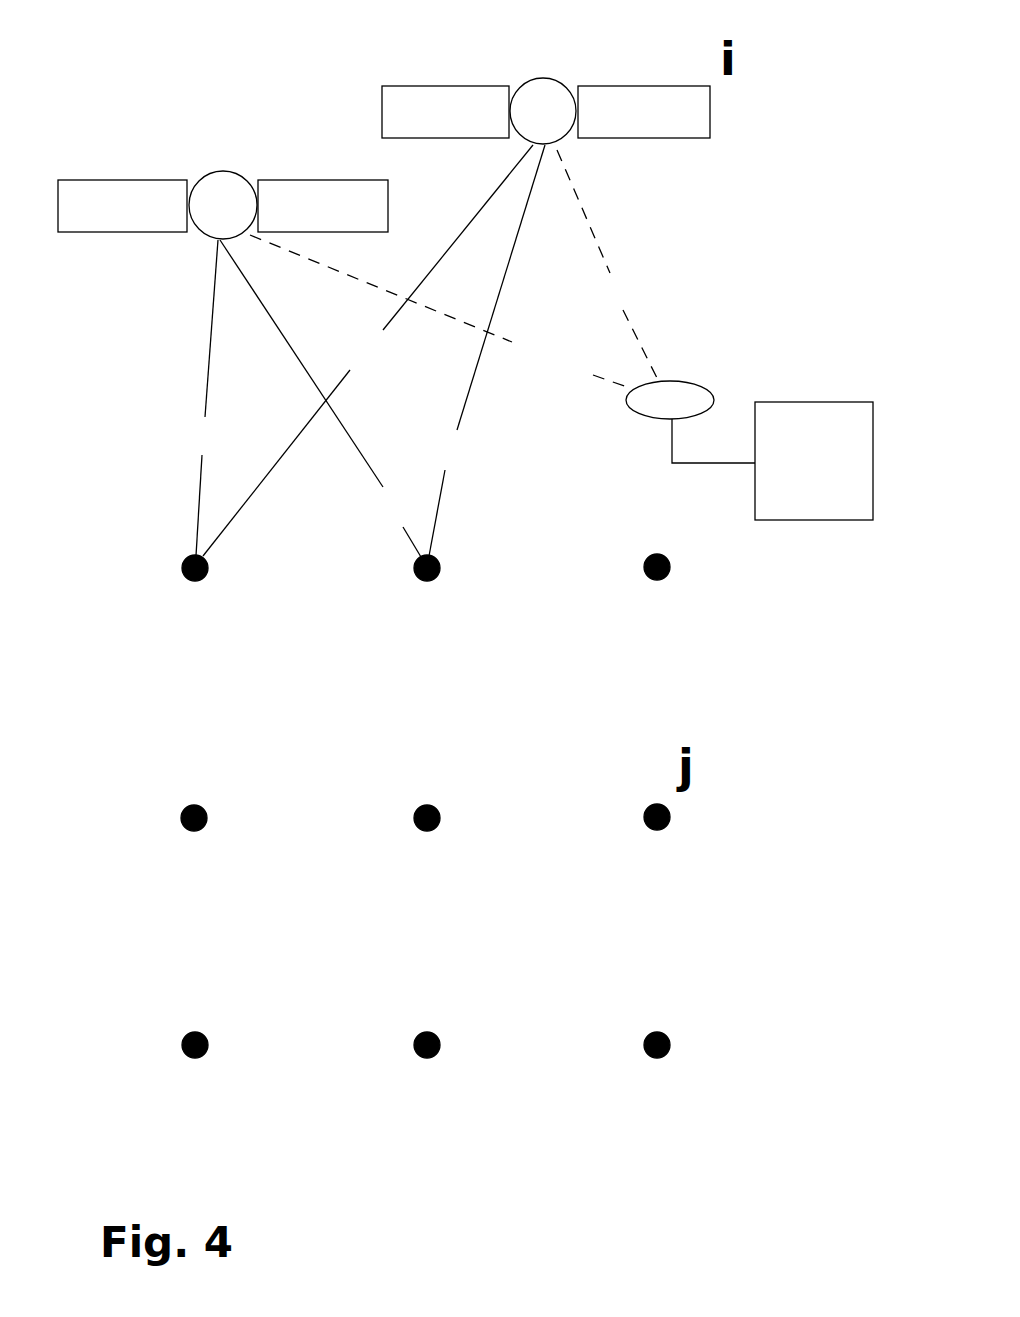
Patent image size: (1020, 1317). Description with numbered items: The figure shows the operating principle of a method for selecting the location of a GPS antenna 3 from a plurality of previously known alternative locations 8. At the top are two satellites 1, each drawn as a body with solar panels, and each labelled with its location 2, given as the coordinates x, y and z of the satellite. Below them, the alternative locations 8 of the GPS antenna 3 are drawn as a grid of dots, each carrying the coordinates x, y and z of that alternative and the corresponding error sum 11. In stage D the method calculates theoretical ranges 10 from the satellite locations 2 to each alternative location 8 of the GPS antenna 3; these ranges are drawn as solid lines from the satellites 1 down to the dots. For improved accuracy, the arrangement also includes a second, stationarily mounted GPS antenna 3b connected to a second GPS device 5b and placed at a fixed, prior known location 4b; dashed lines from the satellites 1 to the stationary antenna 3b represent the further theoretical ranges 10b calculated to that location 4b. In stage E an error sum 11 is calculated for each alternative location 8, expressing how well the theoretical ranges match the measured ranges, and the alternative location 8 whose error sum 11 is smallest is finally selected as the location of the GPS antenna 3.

The satellite 1 is at (384, 158).
The satellite location 2 is at (382, 75).
The GPS antenna 3 is at (443, 813).
The second GPS antenna 3b is at (690, 422).
The location of stationary GPS antenna 4b is at (774, 361).
The second GPS device 5b is at (814, 461).
The alternative location 8 is at (443, 825).
The theoretical range 10 is at (345, 351).
The theoretical range to stationary antenna 10b is at (462, 268).
The error sum 11 is at (436, 806).